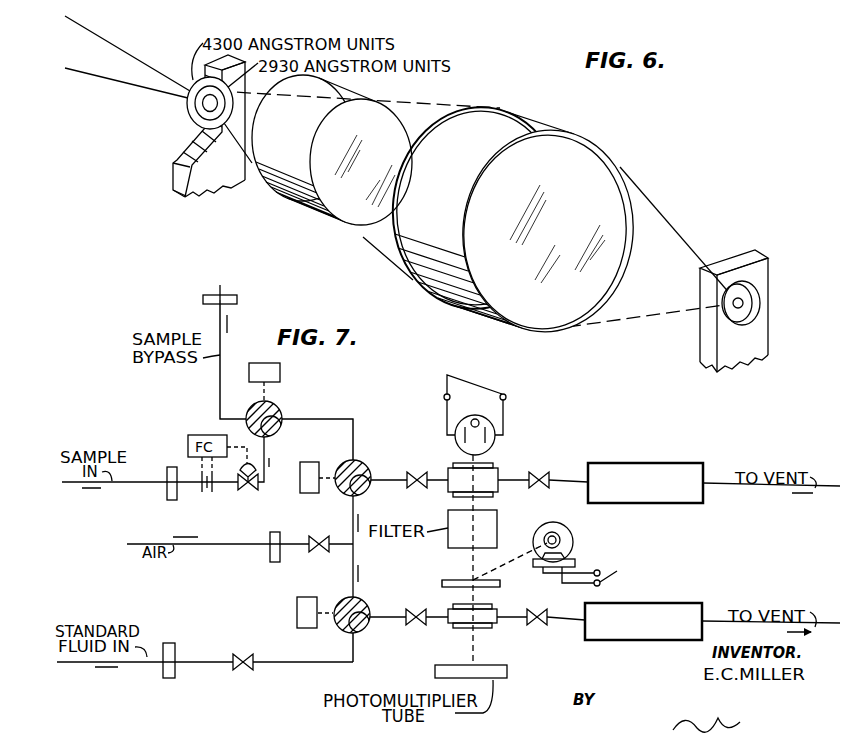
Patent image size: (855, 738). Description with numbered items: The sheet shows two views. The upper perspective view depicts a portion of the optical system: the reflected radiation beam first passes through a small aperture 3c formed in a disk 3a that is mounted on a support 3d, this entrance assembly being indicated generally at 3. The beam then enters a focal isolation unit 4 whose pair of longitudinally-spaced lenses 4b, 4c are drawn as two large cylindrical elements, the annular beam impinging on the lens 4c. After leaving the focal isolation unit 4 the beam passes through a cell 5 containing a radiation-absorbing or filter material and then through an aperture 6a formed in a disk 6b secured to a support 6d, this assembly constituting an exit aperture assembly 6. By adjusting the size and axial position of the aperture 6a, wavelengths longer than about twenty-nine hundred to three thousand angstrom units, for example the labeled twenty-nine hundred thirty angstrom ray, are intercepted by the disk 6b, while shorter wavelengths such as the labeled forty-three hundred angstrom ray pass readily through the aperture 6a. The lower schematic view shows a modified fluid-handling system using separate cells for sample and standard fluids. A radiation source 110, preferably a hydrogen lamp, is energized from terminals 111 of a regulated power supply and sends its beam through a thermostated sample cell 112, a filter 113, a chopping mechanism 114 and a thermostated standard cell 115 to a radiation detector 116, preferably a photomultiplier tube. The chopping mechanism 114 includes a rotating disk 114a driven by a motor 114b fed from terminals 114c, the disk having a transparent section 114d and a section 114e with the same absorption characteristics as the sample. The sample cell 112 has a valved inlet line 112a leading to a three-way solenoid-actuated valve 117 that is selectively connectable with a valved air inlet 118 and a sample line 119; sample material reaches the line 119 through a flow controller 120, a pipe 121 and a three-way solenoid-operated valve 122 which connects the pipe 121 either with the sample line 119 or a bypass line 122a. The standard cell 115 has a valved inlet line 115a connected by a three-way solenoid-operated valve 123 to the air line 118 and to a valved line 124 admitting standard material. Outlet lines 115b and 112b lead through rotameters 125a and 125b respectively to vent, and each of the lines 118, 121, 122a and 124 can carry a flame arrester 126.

In FIG. 6, the aperture assembly 3 is at (766, 243).
In FIG. 6, the disk 3a is at (760, 318).
In FIG. 6, the small aperture 3c is at (744, 300).
In FIG. 6, the support 3d is at (741, 255).
In FIG. 6, the focal isolation unit 4 is at (575, 121).
In FIG. 6, the lens 4b is at (500, 110).
In FIG. 6, the lens 4c is at (600, 146).
In FIG. 6, the cell 5 is at (287, 200).
In FIG. 6, the exit aperture assembly 6 is at (163, 140).
In FIG. 6, the aperture 6a is at (195, 113).
In FIG. 6, the disk 6b is at (199, 79).
In FIG. 6, the support 6d is at (218, 185).
In FIG. 7, the radiation source 110 is at (490, 446).
In FIG. 7, the terminals 111 is at (447, 377).
In FIG. 7, the thermostated sample cell 112 is at (450, 467).
In FIG. 7, the valved inlet line 112a is at (381, 482).
In FIG. 7, the outlet line 112b is at (520, 480).
In FIG. 7, the filter 113 is at (448, 543).
In FIG. 7, the chopping mechanism 114 is at (523, 575).
In FIG. 7, the rotating disk 114a is at (445, 581).
In FIG. 7, the motor 114b is at (568, 531).
In FIG. 7, the terminals 114c is at (611, 576).
In FIG. 7, the transparent section 114d is at (453, 587).
In FIG. 7, the absorbing section 114e is at (487, 587).
In FIG. 7, the thermostated standard cell 115 is at (452, 629).
In FIG. 7, the valved inlet line 115a is at (390, 614).
In FIG. 7, the outlet line 115b is at (507, 623).
In FIG. 7, the radiation detector 116 is at (507, 672).
In FIG. 7, the three-way solenoid-actuated valve 117 is at (364, 463).
In FIG. 7, the valved air inlet 118 is at (340, 543).
In FIG. 7, the sample line 119 is at (343, 419).
In FIG. 7, the flow controller 120 is at (220, 482).
In FIG. 7, the pipe 121 is at (260, 488).
In FIG. 7, the three-way solenoid-operated valve 122 is at (280, 410).
In FIG. 7, the bypass line 122a is at (220, 388).
In FIG. 7, the three-way solenoid-operated valve 123 is at (356, 632).
In FIG. 7, the valved line 124 is at (275, 663).
In FIG. 7, the rotameter 125a is at (667, 603).
In FIG. 7, the rotameter 125b is at (650, 463).
In FIG. 7, the flame arrester 126 is at (203, 300).